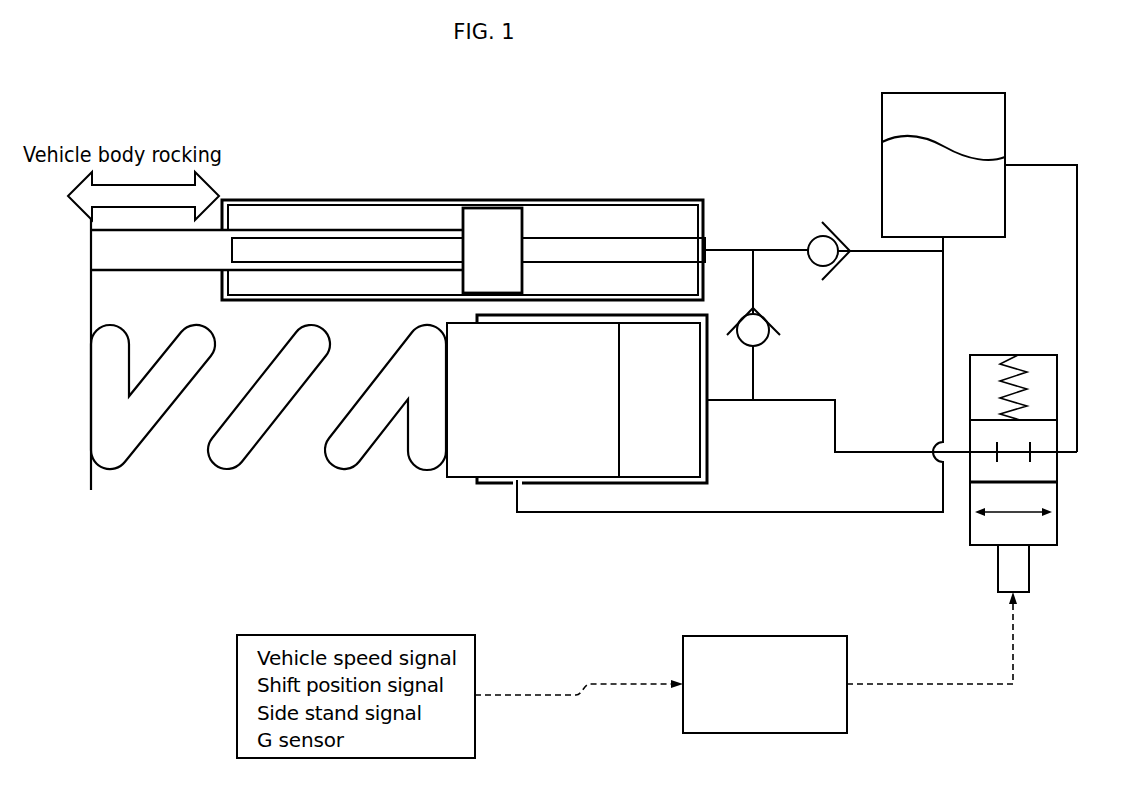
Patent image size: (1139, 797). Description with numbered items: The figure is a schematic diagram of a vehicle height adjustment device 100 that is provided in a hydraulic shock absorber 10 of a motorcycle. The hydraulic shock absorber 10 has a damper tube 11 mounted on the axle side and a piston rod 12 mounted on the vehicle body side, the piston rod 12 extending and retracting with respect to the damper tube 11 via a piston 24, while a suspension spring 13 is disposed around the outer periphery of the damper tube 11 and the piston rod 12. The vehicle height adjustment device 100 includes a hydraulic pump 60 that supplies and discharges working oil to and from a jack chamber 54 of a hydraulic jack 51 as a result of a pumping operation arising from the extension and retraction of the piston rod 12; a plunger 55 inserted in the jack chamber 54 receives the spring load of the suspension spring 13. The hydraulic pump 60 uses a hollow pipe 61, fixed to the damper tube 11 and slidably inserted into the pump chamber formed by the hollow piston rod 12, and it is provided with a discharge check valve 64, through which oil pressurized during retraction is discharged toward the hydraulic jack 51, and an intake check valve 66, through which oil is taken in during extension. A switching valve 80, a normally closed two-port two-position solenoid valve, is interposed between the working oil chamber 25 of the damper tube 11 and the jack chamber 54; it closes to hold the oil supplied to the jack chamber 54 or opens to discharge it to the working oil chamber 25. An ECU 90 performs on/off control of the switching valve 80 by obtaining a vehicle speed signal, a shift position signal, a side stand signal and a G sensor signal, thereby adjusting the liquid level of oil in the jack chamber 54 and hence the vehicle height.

The hydraulic shock absorber 10 is at (258, 200).
The damper tube 11 is at (327, 200).
The piston rod 12 is at (153, 260).
The suspension spring 13 is at (250, 437).
The piston 24 is at (493, 223).
The working oil chamber 25 is at (979, 132).
The hydraulic jack 51 is at (707, 447).
The jack chamber 54 is at (677, 409).
The plunger 55 is at (465, 478).
The hydraulic pump 60 is at (390, 247).
The hollow pipe 61 is at (630, 238).
The discharge check valve 64 is at (768, 340).
The intake check valve 66 is at (822, 237).
The switching valve 80 is at (1057, 527).
The ECU 90 is at (763, 636).
The vehicle height adjustment device 100 is at (562, 431).